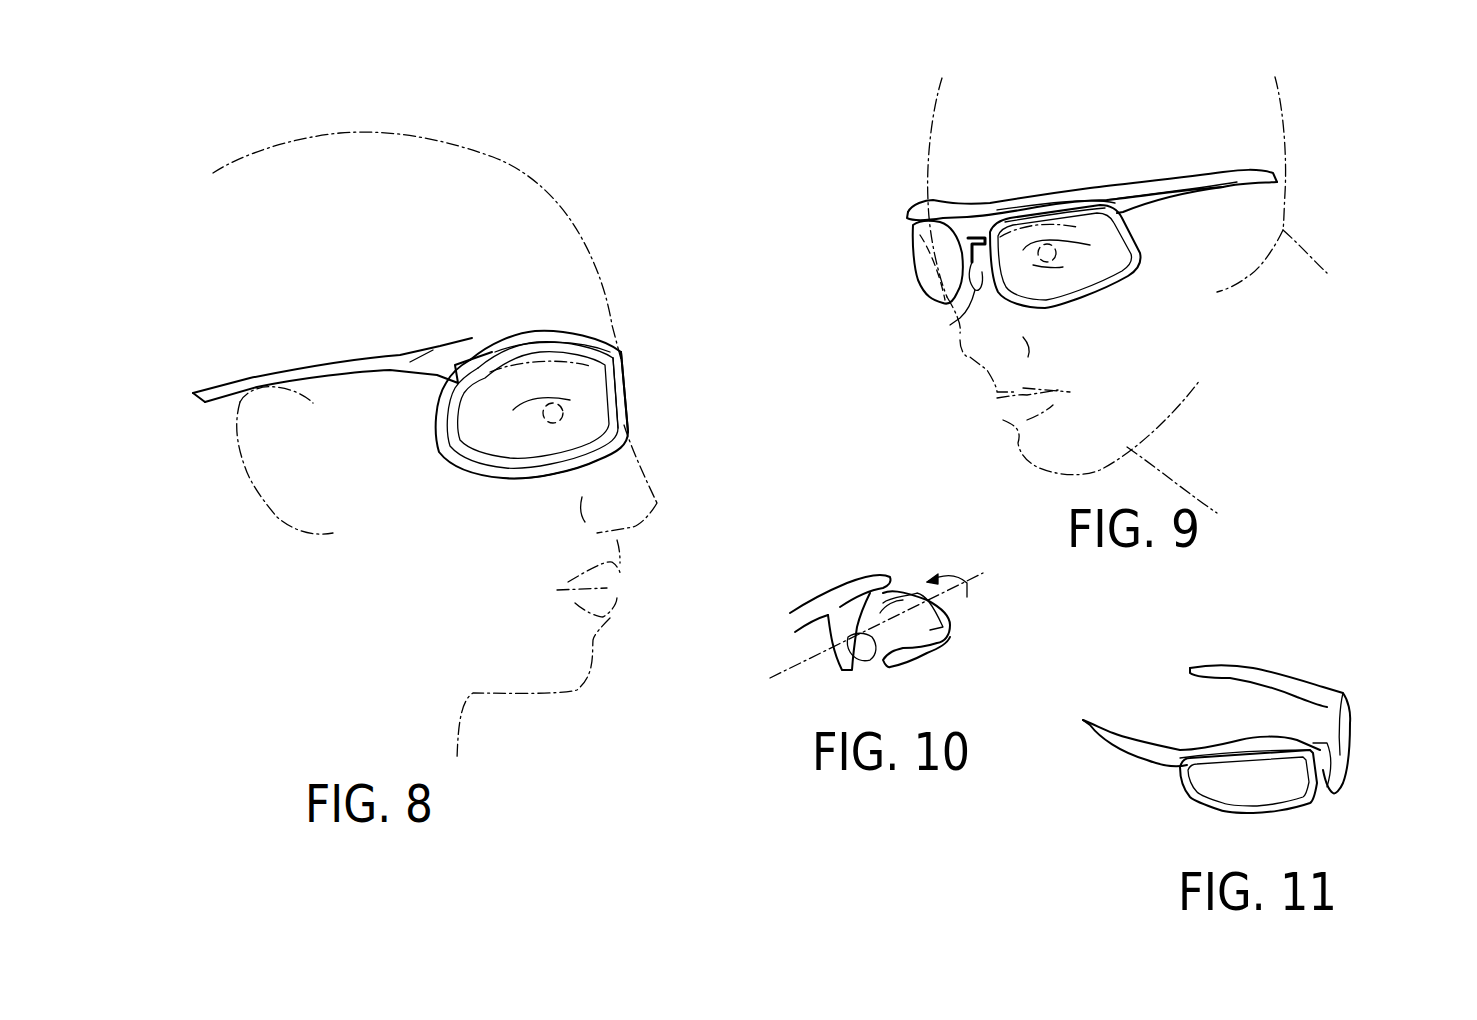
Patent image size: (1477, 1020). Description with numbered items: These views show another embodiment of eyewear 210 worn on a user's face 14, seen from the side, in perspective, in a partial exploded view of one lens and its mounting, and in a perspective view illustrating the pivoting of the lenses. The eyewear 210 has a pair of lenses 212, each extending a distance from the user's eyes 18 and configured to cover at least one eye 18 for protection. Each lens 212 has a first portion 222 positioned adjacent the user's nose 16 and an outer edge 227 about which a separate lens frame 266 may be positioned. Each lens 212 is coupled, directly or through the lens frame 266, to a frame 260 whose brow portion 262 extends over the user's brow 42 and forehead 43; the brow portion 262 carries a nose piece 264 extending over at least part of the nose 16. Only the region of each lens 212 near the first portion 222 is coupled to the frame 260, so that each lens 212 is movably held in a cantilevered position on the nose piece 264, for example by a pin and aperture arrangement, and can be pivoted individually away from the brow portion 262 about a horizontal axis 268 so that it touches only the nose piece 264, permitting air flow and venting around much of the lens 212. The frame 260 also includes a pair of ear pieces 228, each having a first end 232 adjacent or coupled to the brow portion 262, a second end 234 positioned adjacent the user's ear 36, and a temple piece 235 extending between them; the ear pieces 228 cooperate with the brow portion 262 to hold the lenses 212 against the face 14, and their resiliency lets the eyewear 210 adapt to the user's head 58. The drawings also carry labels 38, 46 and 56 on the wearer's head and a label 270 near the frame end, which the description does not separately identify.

In FIG. 9, the face 14 is at (873, 377).
In FIG. 8, the nose 16 is at (657, 503).
In FIG. 9, the nose 16 is at (960, 360).
In FIG. 8, the eyes 18 is at (553, 423).
In FIG. 8, the ear 36 is at (270, 482).
In FIG. 9, the ear 36 is at (1267, 230).
In FIG. 8, the temple region of head 38 is at (412, 415).
In FIG. 9, the temple region of head 38 is at (1177, 245).
In FIG. 8, the brow 42 is at (568, 342).
In FIG. 9, the brow 42 is at (1103, 193).
In FIG. 8, the forehead 43 is at (583, 328).
In FIG. 9, the forehead 43 is at (957, 197).
In FIG. 8, the cheek region 46 is at (500, 530).
In FIG. 9, the cheek region 46 is at (1113, 357).
In FIG. 8, the head of wearer 56 is at (220, 280).
In FIG. 9, the head of wearer 56 is at (1272, 120).
In FIG. 8, the head 58 is at (282, 163).
In FIG. 9, the head 58 is at (940, 117).
In FIG. 8, the eyewear 210 is at (662, 348).
In FIG. 9, the eyewear 210 is at (900, 193).
In FIG. 11, the eyewear 210 is at (1333, 660).
In FIG. 8, the lenses 212 is at (483, 443).
In FIG. 9, the lenses 212 is at (1103, 267).
In FIG. 11, the lenses 212 is at (1193, 782).
In FIG. 9, the first portion 222 is at (982, 225).
In FIG. 10, the outer edge 227 is at (940, 627).
In FIG. 9, the ear pieces 228 is at (1208, 170).
In FIG. 8, the first end 232 is at (437, 350).
In FIG. 9, the first end 232 is at (1152, 185).
In FIG. 8, the second end 234 is at (228, 385).
In FIG. 8, the temple piece 235 is at (342, 363).
In FIG. 9, the temple piece 235 is at (1190, 180).
In FIG. 8, the frame 260 is at (525, 342).
In FIG. 9, the frame 260 is at (1072, 197).
In FIG. 11, the frame 260 is at (1262, 750).
In FIG. 8, the brow portion 262 is at (470, 340).
In FIG. 9, the brow portion 262 is at (1035, 203).
In FIG. 11, the brow portion 262 is at (1300, 720).
In FIG. 8, the nose piece 264 is at (623, 423).
In FIG. 9, the nose piece 264 is at (963, 313).
In FIG. 8, the lens frame 266 is at (530, 480).
In FIG. 10, the lens frame 266 is at (910, 660).
In FIG. 11, the lens frame 266 is at (1240, 793).
In FIG. 9, the axis 268 is at (913, 253).
In FIG. 10, the axis 268 is at (983, 573).
In FIG. 11, the axis 268 is at (1257, 740).
In FIG. 11, the end piece 270 is at (1347, 737).